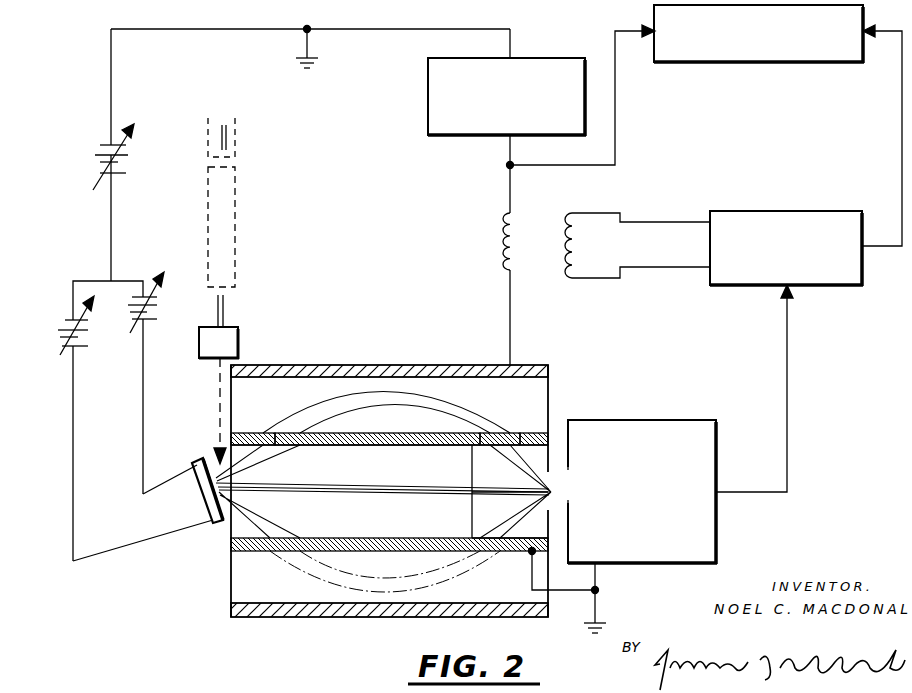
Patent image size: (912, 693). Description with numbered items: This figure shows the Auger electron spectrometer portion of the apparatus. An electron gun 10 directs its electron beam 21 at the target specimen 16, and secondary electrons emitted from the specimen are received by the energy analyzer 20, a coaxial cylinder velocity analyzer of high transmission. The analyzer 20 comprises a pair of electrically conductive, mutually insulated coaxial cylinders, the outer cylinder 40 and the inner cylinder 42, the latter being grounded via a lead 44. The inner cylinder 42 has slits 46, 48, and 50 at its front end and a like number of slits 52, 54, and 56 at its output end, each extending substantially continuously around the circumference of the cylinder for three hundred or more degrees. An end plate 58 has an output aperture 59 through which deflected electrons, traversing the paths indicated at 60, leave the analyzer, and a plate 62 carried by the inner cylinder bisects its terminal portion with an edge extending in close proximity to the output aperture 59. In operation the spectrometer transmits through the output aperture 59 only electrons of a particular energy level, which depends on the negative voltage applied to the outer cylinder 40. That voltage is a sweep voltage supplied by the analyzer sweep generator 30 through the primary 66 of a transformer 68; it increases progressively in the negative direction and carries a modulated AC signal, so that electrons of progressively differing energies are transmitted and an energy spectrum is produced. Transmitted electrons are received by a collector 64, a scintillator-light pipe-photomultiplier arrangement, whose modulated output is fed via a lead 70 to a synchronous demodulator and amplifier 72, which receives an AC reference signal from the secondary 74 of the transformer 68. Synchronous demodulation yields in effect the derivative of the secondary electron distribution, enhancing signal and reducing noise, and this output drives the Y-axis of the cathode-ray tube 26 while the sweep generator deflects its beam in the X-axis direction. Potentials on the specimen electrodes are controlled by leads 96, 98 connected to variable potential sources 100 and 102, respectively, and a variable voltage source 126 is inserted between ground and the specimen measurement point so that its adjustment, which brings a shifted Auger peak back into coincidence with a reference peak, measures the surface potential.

The electron gun 10 is at (235, 193).
The target specimen 16 is at (214, 526).
The energy analyzer 20 is at (284, 343).
The electron beam 21 is at (217, 415).
The cathode-ray tube 26 is at (768, 63).
The analyzer sweep generator 30 is at (428, 97).
The outer cylinder 40 is at (391, 364).
The inner cylinder 42 is at (412, 448).
The lead 44 is at (597, 606).
The slit 46 is at (293, 447).
The slit 48 is at (287, 433).
The slit 50 is at (269, 432).
The slit 52 is at (526, 433).
The slit 54 is at (501, 434).
The slit 56 is at (488, 450).
The end plate 58 is at (552, 470).
The output aperture 59 is at (556, 490).
The electron paths 60 is at (421, 404).
The plate 62 is at (512, 492).
The collector 64 is at (665, 419).
The primary 66 is at (497, 230).
The transformer 68 is at (582, 261).
The lead 70 is at (788, 400).
The synchronous demodulator and amplifier 72 is at (758, 287).
The secondary 74 is at (576, 246).
The lead 96 is at (75, 483).
The lead 98 is at (142, 438).
The variable potential source 100 is at (80, 348).
The variable potential source 102 is at (150, 322).
The variable voltage source 126 is at (127, 176).